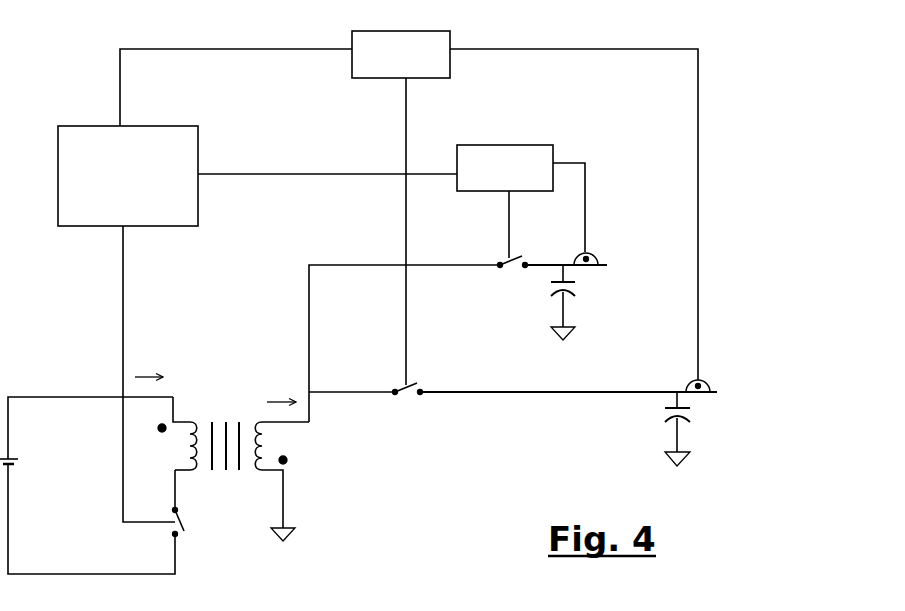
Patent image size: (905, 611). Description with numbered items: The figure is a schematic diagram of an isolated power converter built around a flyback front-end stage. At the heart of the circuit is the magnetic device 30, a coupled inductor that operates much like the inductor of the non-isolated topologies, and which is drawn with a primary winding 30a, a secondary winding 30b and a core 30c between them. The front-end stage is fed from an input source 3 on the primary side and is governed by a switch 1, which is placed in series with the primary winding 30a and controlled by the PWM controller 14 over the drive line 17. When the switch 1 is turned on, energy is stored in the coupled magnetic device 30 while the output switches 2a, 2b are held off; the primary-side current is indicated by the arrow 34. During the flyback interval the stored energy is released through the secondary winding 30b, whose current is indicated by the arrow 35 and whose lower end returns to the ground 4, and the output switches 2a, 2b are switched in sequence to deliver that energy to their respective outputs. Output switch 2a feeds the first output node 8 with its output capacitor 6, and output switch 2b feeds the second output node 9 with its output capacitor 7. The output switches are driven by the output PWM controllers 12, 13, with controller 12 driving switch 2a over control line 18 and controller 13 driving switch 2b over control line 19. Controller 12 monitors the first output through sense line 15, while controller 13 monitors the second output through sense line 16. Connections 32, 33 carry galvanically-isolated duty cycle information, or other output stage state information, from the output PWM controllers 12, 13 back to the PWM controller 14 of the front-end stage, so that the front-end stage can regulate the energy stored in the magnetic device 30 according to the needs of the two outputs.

The switch 1 is at (190, 536).
The output switch 2a is at (494, 258).
The output switch 2b is at (392, 382).
The input voltage source Vin 3 is at (24, 475).
The ground connection of secondary winding 4 is at (298, 541).
The output capacitor 6 is at (582, 300).
The output capacitor 7 is at (692, 432).
The first output node V1 8 is at (614, 275).
The second output node V2 9 is at (742, 420).
The output PWM controller 12 is at (507, 139).
The output PWM controller 13 is at (390, 26).
The PWM controller 14 is at (95, 116).
The V1 sense line 15 is at (584, 162).
The V2 sense line 16 is at (703, 193).
The D1 drive line 17 is at (118, 333).
The control line to switch 2a 18 is at (511, 208).
The control line to switch 2b 19 is at (404, 313).
The magnetic device 30 is at (248, 453).
The primary winding 30a is at (195, 480).
The secondary winding 30b is at (298, 481).
The transformer core 30c is at (241, 480).
The connection 32 is at (265, 47).
The connection 33 is at (324, 172).
The primary current ILp 34 is at (161, 350).
The secondary current ILs 35 is at (277, 368).